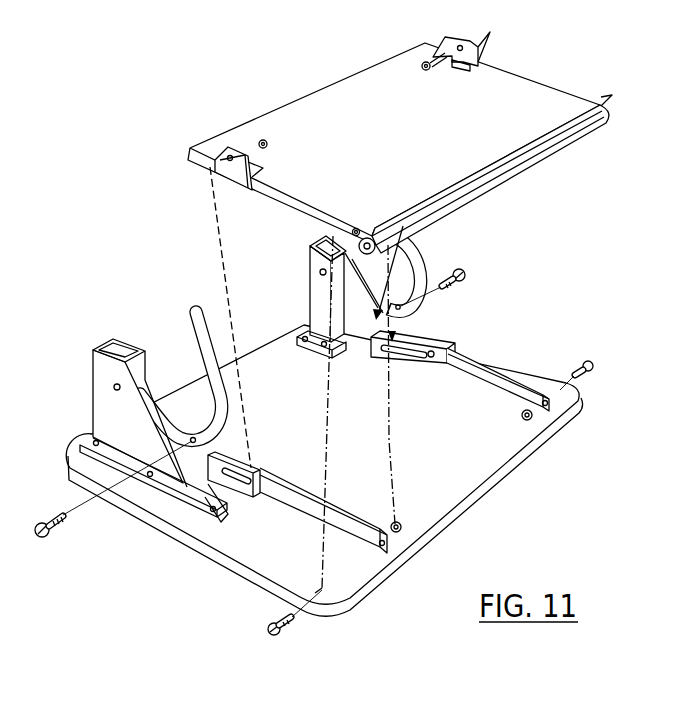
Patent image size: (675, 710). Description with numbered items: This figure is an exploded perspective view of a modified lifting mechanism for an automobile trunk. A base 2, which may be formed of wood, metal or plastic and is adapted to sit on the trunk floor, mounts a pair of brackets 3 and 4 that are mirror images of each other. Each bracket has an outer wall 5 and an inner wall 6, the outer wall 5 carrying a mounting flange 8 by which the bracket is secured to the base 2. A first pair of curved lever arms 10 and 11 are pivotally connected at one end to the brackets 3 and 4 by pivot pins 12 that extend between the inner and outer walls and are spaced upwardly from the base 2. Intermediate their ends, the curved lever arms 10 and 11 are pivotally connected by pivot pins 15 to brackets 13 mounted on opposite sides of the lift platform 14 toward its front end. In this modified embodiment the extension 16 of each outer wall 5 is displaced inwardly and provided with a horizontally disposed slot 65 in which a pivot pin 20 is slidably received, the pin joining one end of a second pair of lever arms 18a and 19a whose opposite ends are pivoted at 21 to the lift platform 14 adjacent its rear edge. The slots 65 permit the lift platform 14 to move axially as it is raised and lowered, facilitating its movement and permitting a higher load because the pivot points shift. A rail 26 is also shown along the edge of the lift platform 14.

The base 2 is at (348, 583).
The bracket 3 is at (105, 328).
The bracket 4 is at (288, 249).
The outer wall 5 is at (100, 403).
The inner wall 6 is at (128, 345).
The mounting flange 8 is at (107, 457).
The curved lever arm 10 is at (205, 333).
The curved lever arm 11 is at (419, 250).
The pivot pin 12 is at (113, 386).
The bracket 13 is at (220, 161).
The lift platform 14 is at (418, 139).
The pivot pin 15 is at (48, 535).
The extension 16 is at (368, 350).
The lever arm 18a is at (283, 492).
The lever arm 19a is at (461, 370).
The pivot pin 20 is at (249, 499).
The pivot 21 is at (592, 360).
The rail 26 is at (489, 174).
The slot 65 is at (232, 476).